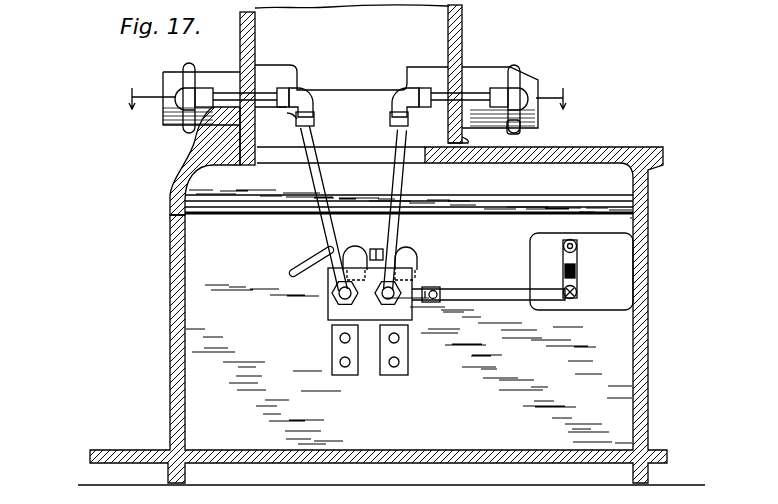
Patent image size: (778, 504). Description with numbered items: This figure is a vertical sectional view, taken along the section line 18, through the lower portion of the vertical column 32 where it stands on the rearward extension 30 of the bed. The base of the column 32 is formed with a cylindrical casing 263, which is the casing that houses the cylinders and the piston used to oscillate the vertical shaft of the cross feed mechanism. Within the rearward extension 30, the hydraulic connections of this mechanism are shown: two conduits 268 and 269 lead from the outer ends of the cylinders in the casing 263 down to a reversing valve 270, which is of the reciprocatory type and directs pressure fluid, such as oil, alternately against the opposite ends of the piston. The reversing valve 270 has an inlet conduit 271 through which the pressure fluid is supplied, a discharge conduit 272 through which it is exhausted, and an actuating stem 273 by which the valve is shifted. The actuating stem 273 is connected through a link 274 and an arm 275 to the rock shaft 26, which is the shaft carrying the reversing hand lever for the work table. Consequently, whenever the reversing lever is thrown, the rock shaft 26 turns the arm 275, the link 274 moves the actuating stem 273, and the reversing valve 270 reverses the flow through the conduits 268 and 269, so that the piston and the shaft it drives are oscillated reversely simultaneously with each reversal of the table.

The section line 18 is at (340, 98).
The rock shaft 26 is at (578, 246).
The rearward extension 30 is at (650, 263).
The vertical column 32 is at (463, 29).
The cylindrical casing 263 is at (490, 66).
The conduit 268 is at (397, 227).
The conduit 269 is at (323, 231).
The reversing valve 270 is at (328, 305).
The inlet conduit 271 is at (306, 262).
The discharge conduit 272 is at (407, 258).
The actuating stem 273 is at (426, 287).
The link 274 is at (494, 289).
The arm 275 is at (578, 266).